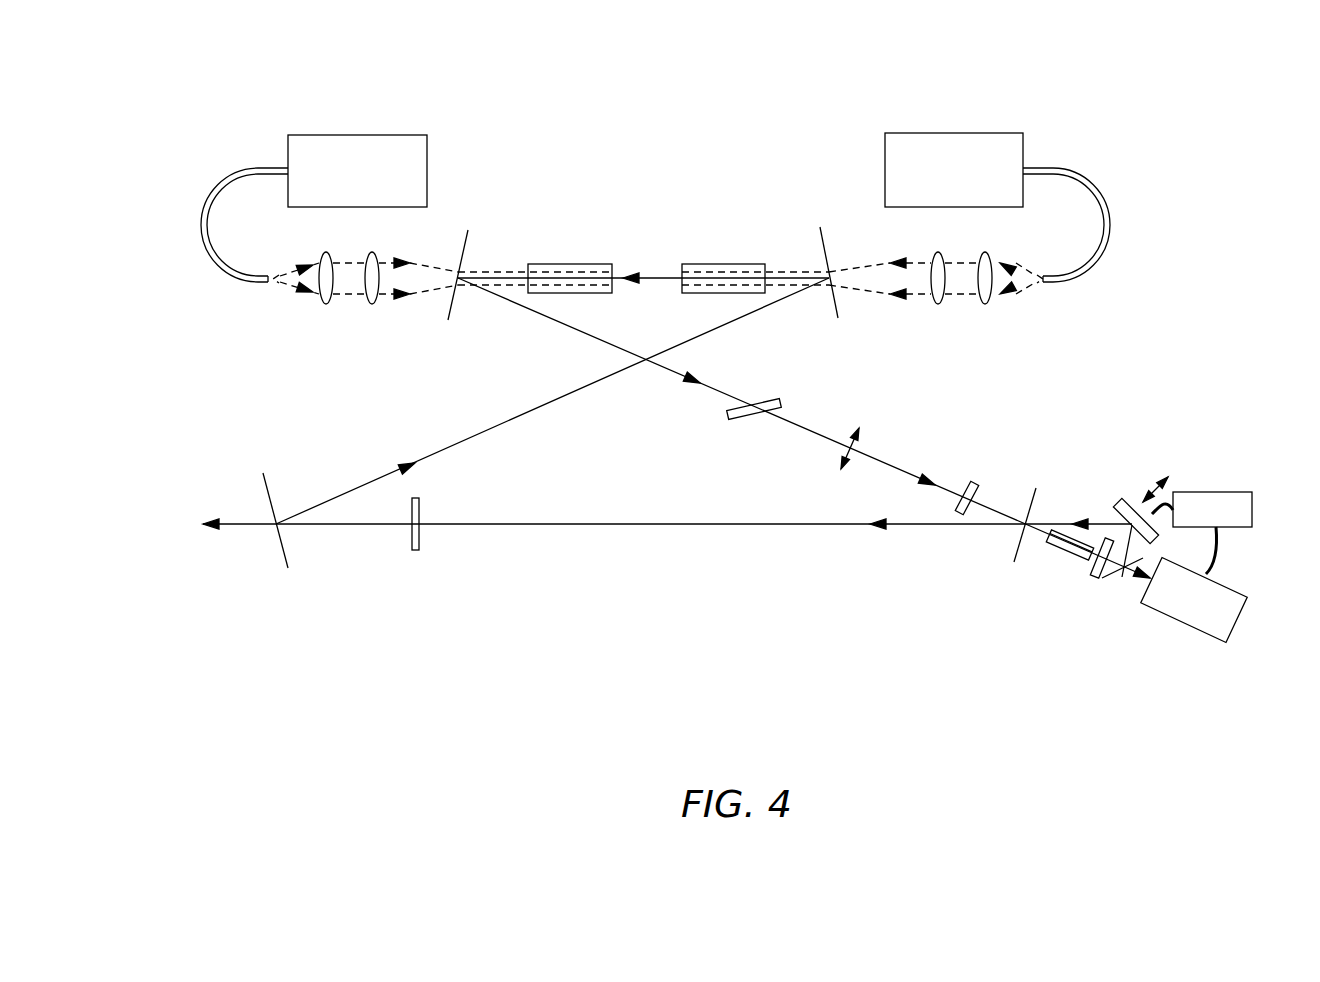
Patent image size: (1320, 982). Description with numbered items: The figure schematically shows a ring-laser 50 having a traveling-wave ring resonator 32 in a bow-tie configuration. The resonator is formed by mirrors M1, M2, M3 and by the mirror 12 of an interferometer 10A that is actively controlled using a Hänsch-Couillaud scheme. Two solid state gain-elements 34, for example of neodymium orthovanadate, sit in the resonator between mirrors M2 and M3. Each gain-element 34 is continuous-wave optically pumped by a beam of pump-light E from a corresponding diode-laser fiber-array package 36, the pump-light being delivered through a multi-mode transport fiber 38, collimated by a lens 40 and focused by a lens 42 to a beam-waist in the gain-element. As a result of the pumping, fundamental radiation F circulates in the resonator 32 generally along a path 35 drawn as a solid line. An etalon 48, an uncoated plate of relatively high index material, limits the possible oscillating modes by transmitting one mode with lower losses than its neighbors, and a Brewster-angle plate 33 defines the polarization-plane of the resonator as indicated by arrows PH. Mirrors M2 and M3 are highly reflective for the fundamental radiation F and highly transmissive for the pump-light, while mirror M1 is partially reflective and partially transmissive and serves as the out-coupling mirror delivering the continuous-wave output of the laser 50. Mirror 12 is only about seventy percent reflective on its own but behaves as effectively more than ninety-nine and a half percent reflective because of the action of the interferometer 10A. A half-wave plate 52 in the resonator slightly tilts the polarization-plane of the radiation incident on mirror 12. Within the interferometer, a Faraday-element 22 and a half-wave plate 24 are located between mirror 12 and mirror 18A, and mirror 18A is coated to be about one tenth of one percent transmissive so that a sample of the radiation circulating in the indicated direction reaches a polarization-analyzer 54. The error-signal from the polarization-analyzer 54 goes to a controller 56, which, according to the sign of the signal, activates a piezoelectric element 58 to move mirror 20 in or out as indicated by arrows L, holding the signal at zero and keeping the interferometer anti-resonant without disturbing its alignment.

The interferometer 10A is at (1067, 585).
The mirror 12 is at (1010, 556).
The mirror 18A is at (1119, 578).
The mirror 20 is at (1122, 511).
The Faraday-element 22 is at (1058, 547).
The half-wave plate 24 is at (1090, 578).
The ring resonator 32 is at (666, 274).
The Brewster-angle plate 33 is at (770, 401).
The solid state gain-element 34 is at (562, 264).
The path 35 is at (577, 393).
The diode-laser fiber-array package 36 is at (395, 138).
The multi-mode transport fiber 38 is at (250, 168).
The lens 40 is at (322, 300).
The lens 42 is at (372, 300).
The etalon 48 is at (416, 537).
The ring-laser 50 is at (526, 683).
The half-wave plate 52 is at (979, 481).
The polarization-analyzer 54 is at (1181, 630).
The controller 56 is at (1230, 491).
The piezoelectric element 58 is at (1130, 498).
The pump-light E is at (292, 291).
The fundamental radiation F is at (418, 467).
The arrows L is at (1155, 478).
The mirror M1 is at (285, 543).
The mirror M2 is at (823, 249).
The mirror M3 is at (468, 242).
The arrows PH is at (860, 438).